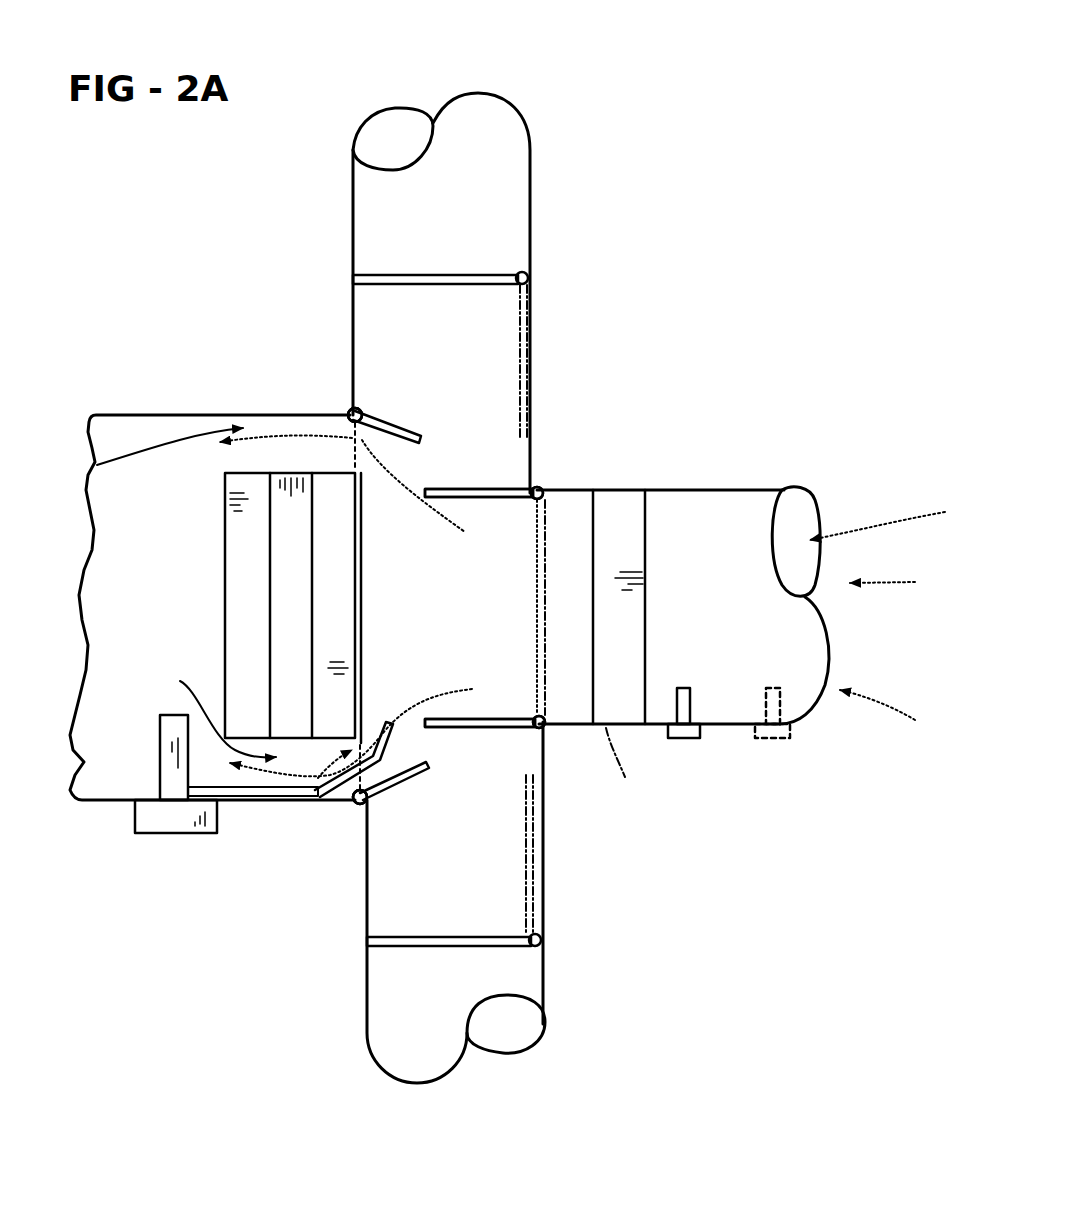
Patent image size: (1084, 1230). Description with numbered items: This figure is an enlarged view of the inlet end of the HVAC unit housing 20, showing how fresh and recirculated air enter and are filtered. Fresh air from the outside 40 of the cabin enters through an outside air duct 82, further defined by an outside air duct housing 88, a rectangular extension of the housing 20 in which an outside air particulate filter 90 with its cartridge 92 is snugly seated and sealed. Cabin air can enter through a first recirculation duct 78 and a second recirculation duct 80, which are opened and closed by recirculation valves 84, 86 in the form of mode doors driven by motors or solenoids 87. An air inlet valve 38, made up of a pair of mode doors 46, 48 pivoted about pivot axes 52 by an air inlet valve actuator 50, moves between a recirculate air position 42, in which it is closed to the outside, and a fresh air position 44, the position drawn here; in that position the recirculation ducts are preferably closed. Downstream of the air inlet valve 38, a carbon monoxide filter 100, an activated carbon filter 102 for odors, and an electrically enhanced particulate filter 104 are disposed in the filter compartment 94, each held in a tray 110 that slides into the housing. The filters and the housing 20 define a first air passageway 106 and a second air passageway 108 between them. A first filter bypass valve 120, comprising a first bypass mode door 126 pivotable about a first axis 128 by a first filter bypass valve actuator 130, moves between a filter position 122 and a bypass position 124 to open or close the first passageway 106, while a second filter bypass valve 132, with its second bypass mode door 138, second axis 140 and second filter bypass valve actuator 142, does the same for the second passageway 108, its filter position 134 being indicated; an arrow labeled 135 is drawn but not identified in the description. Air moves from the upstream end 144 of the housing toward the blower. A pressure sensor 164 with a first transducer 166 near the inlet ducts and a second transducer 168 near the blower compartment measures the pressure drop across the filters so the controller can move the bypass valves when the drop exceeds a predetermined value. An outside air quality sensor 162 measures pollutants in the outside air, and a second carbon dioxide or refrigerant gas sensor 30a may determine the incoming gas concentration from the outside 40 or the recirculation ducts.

The housing 20 is at (113, 415).
The second carbon dioxide or refrigerant gas sensor 30a is at (775, 738).
The air inlet valve 38 is at (650, 503).
The outside 40 is at (741, 600).
The recirculate air position 42 is at (630, 759).
The fresh air position 44 is at (470, 487).
The mode door 46 is at (500, 498).
The mode door 48 is at (483, 716).
The air inlet valve actuator 50 is at (542, 487).
The pivot axes 52 is at (546, 493).
The first recirculation duct 78 is at (428, 93).
The second recirculation duct 80 is at (473, 1068).
The outside air duct 82 is at (842, 631).
The recirculation valve 84 is at (413, 255).
The recirculation valve 86 is at (432, 952).
The motor or solenoid 87 is at (537, 945).
The outside air duct housing 88 is at (710, 490).
The outside air particulate filter 90 is at (678, 521).
The cartridge 92 is at (633, 634).
The filter compartment 94 is at (158, 636).
The carbon monoxide filter 100 is at (243, 522).
The activated carbon filter 102 is at (290, 534).
The particulate filter 104 is at (326, 553).
The first air passageway 106 is at (97, 465).
The second air passageway 108 is at (304, 723).
The tray 110 is at (228, 644).
The first filter bypass valve 120 is at (367, 409).
The filter position 122 is at (368, 437).
The bypass position 124 is at (392, 420).
The first bypass mode door 126 is at (397, 418).
The first axis 128 is at (350, 408).
The first filter bypass valve actuator 130 is at (346, 410).
The second filter bypass valve 132 is at (372, 810).
The filter position 134 is at (347, 797).
The air flow 135 is at (400, 808).
The second bypass mode door 138 is at (429, 768).
The second axis 140 is at (355, 803).
The second filter bypass valve actuator 142 is at (360, 804).
The upstream end 144 is at (670, 845).
The outside air quality sensor 162 is at (683, 738).
The pressure sensor 164 is at (176, 835).
The first transducer 166 is at (392, 724).
The second transducer 168 is at (162, 730).